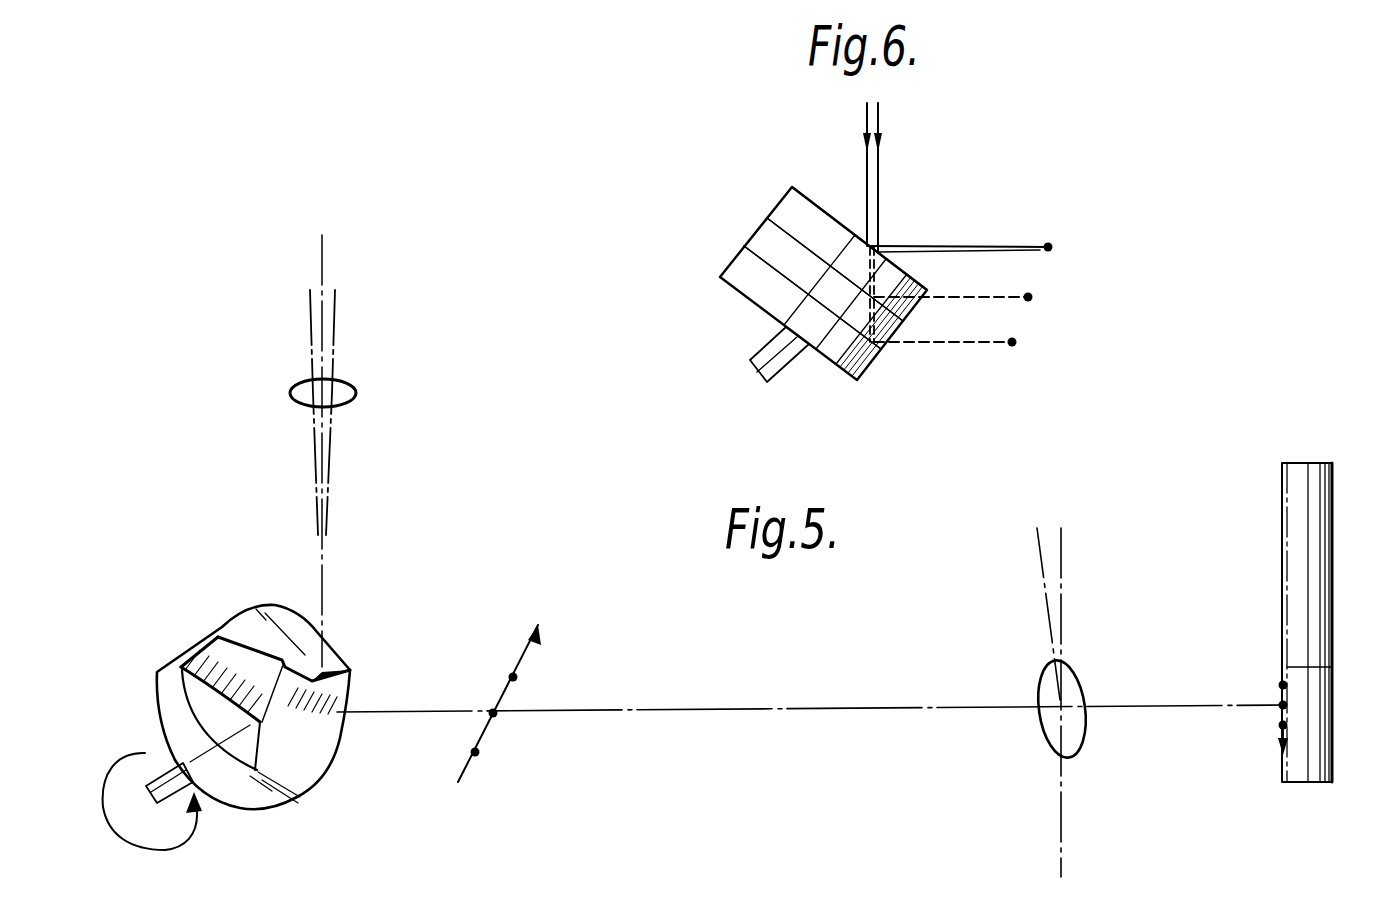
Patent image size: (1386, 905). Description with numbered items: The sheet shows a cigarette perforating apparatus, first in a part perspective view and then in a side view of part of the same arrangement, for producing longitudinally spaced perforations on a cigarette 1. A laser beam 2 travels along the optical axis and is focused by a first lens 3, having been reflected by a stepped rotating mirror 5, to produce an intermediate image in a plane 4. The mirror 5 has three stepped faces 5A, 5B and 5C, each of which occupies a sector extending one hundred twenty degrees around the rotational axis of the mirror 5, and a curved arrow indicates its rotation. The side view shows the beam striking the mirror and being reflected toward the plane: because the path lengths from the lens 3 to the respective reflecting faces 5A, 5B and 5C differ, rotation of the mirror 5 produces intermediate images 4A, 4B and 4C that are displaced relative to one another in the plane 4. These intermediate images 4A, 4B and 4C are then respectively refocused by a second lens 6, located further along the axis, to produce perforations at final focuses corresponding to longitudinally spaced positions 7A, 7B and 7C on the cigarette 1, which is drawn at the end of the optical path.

In FIG. 5, the cigarette 1 is at (1313, 548).
In FIG. 5, the laser beam 2 is at (335, 326).
In FIG. 5, the first lens 3 is at (298, 382).
In FIG. 5, the plane 4 is at (462, 773).
In FIG. 6, the intermediate image 4A is at (1050, 248).
In FIG. 6, the intermediate image 4B is at (1030, 298).
In FIG. 6, the intermediate image 4C is at (1014, 343).
In FIG. 5, the stepped rotating mirror 5 is at (152, 686).
In FIG. 6, the stepped rotating mirror 5 is at (724, 299).
In FIG. 5, the stepped face 5A is at (244, 622).
In FIG. 6, the stepped face 5A is at (817, 207).
In FIG. 5, the stepped face 5B is at (313, 752).
In FIG. 6, the stepped face 5B is at (778, 218).
In FIG. 5, the stepped face 5C is at (213, 708).
In FIG. 6, the stepped face 5C is at (752, 252).
In FIG. 5, the second lens 6 is at (1048, 740).
In FIG. 5, the longitudinally spaced position 7A is at (1280, 727).
In FIG. 5, the longitudinally spaced position 7B is at (1280, 707).
In FIG. 5, the longitudinally spaced position 7C is at (1283, 685).